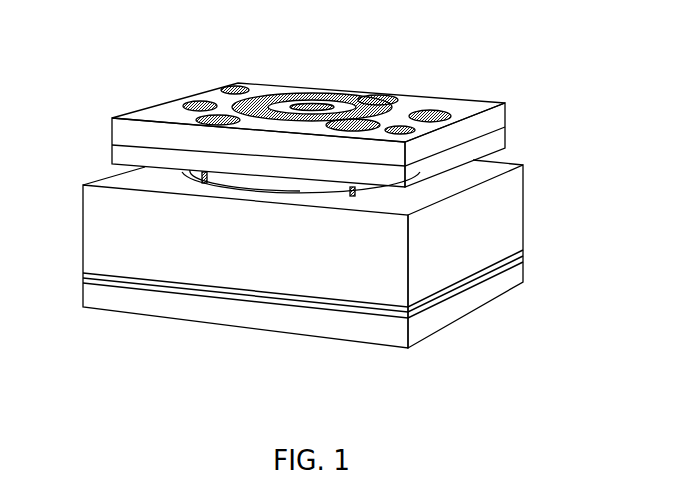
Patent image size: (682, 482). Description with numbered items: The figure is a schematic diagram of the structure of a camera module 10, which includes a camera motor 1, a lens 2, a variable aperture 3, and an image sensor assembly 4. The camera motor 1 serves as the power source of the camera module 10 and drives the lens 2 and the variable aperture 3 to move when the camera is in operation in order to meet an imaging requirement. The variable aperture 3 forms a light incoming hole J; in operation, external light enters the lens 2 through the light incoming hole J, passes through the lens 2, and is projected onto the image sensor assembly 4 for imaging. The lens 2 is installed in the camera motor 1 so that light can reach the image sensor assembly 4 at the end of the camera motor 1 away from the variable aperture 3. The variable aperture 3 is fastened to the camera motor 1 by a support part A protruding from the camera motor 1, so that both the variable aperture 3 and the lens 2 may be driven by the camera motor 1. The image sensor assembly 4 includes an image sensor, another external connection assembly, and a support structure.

The camera module 10 is at (51, 27).
The light incoming hole J is at (327, 101).
The variable aperture 3 is at (493, 122).
The camera motor 1 is at (500, 224).
The image sensor assembly 4 is at (505, 279).
The lens 2 is at (307, 188).
The support part A is at (352, 187).